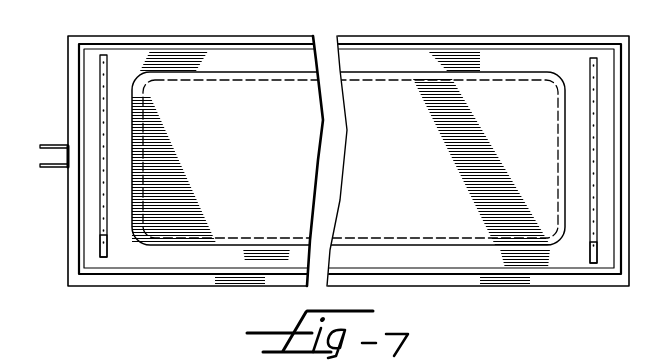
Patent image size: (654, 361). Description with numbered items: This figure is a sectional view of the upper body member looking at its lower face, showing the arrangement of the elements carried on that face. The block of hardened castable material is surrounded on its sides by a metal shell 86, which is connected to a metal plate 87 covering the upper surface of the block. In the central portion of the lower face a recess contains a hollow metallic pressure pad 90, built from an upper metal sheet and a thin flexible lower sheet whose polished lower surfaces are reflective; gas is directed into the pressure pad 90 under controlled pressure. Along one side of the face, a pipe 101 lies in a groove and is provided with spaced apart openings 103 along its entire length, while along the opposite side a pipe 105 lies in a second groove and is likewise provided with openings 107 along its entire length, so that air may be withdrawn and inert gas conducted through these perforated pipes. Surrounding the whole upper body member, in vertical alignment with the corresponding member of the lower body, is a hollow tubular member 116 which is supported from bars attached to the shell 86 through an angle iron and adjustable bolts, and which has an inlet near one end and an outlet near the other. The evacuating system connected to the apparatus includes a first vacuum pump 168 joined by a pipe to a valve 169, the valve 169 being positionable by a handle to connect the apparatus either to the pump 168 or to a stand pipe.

The metal shell 86 is at (436, 49).
The metal plate 87 is at (515, 48).
The pressure pad 90 is at (237, 237).
The pipe 101 is at (108, 64).
The openings 103 is at (104, 236).
The pipe 105 is at (590, 63).
The openings 107 is at (590, 246).
The hollow tubular member 116 is at (270, 38).
The first vacuum pump 168 is at (52, 145).
The valve 169 is at (57, 169).